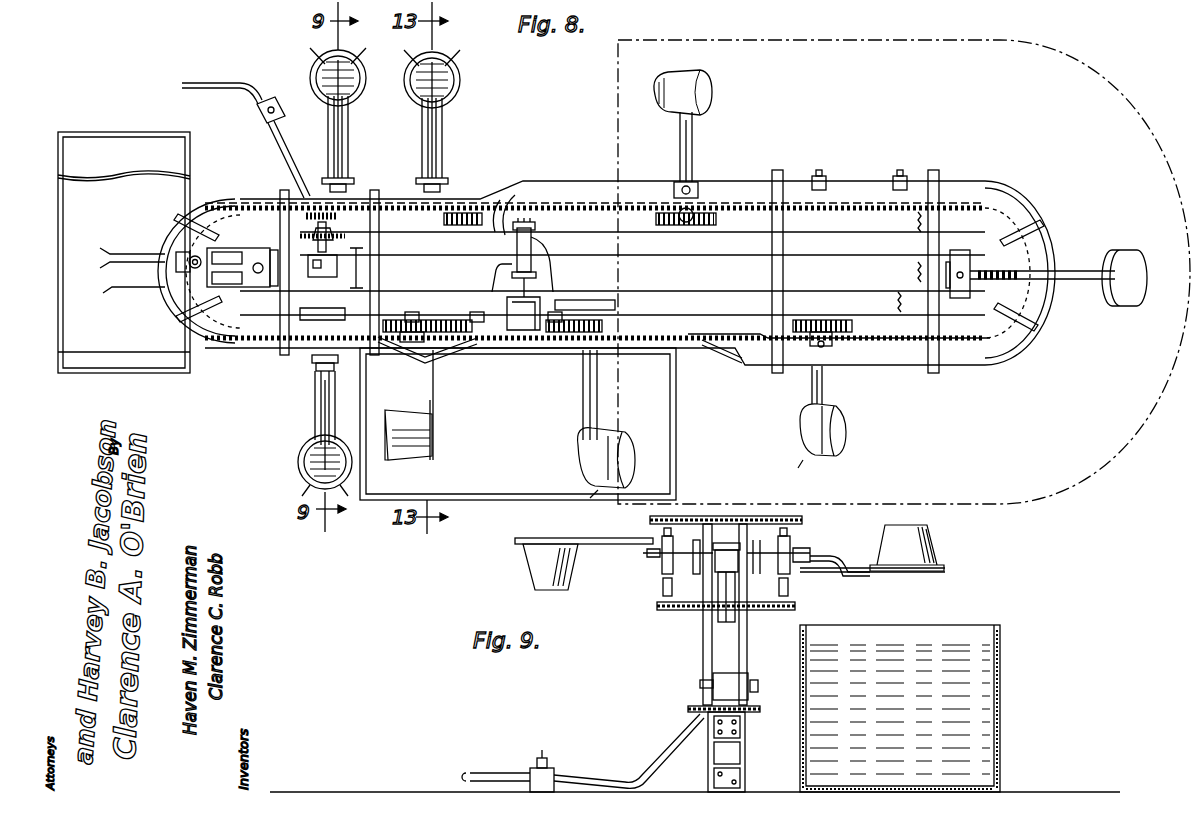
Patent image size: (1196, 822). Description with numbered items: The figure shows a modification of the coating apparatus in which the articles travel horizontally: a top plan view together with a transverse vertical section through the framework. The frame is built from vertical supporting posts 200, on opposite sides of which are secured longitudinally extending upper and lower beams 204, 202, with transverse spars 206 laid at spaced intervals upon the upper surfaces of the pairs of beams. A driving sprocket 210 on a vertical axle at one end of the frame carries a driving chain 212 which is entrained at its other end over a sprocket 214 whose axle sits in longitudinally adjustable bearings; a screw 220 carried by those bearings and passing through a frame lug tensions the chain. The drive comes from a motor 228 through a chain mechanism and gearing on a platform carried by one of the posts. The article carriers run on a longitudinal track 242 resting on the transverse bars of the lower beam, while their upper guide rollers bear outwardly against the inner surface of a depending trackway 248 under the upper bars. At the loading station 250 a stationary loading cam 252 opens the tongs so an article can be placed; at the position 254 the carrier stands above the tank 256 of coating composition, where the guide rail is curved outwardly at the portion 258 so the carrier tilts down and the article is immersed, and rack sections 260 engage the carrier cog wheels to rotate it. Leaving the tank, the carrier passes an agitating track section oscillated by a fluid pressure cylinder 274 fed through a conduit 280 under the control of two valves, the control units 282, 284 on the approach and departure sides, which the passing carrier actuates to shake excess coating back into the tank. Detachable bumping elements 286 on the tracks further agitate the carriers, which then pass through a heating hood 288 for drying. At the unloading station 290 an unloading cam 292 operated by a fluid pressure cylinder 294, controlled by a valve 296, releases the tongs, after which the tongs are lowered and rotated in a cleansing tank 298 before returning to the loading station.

In FIG. 9, the supporting posts 200 is at (710, 648).
In FIG. 9, the lower beam 202 is at (750, 612).
In FIG. 8, the upper beam 204 is at (652, 302).
In FIG. 9, the upper beam 204 is at (766, 522).
In FIG. 8, the transverse spars 206 is at (772, 272).
In FIG. 9, the transverse spars 206 is at (738, 518).
In FIG. 8, the driving sprocket 210 is at (242, 316).
In FIG. 8, the driving chain 212 is at (592, 200).
In FIG. 8, the sprocket 214 is at (922, 230).
In FIG. 8, the screw 220 is at (1012, 262).
In FIG. 9, the motor 228 is at (742, 680).
In FIG. 9, the track 242 is at (792, 578).
In FIG. 9, the trackway 248 is at (800, 532).
In FIG. 8, the loading station 250 is at (300, 352).
In FIG. 8, the loading cam 252 is at (268, 325).
In FIG. 8, the immersion position 254 is at (445, 368).
In FIG. 8, the tank 256 is at (655, 423).
In FIG. 9, the tank 256 is at (1002, 729).
In FIG. 8, the curved portion of guide track 258 is at (458, 352).
In FIG. 8, the rack sections 260 is at (466, 213).
In FIG. 8, the fluid pressure cylinder 274 is at (524, 209).
In FIG. 8, the conduit 280 is at (502, 290).
In FIG. 8, the control unit 282 is at (488, 312).
In FIG. 8, the control unit 284 is at (562, 312).
In FIG. 8, the bumping elements 286 is at (822, 176).
In FIG. 8, the heating hood 288 is at (1106, 440).
In FIG. 8, the unloading station 290 is at (355, 184).
In FIG. 8, the unloading cam 292 is at (318, 228).
In FIG. 9, the unloading cam 292 is at (697, 536).
In FIG. 8, the fluid pressure cylinder 294 is at (307, 262).
In FIG. 9, the fluid pressure cylinder 294 is at (728, 550).
In FIG. 8, the valve 296 is at (272, 100).
In FIG. 9, the valve 296 is at (536, 768).
In FIG. 8, the cleansing tank 298 is at (121, 150).